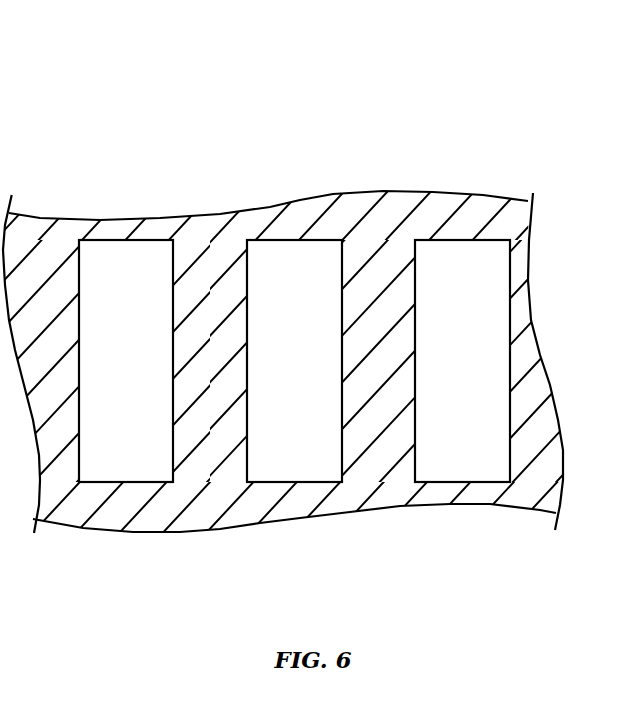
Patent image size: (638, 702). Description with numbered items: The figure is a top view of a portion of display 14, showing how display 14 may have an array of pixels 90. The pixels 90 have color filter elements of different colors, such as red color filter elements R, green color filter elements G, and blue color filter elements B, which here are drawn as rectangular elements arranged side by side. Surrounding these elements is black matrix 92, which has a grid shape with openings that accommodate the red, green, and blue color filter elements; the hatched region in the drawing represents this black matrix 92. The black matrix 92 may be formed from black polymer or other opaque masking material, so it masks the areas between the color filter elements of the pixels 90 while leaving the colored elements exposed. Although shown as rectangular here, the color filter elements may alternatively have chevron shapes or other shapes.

The display 14 is at (544, 86).
The black matrix 92 is at (208, 233).
The pixels 90 is at (124, 468).